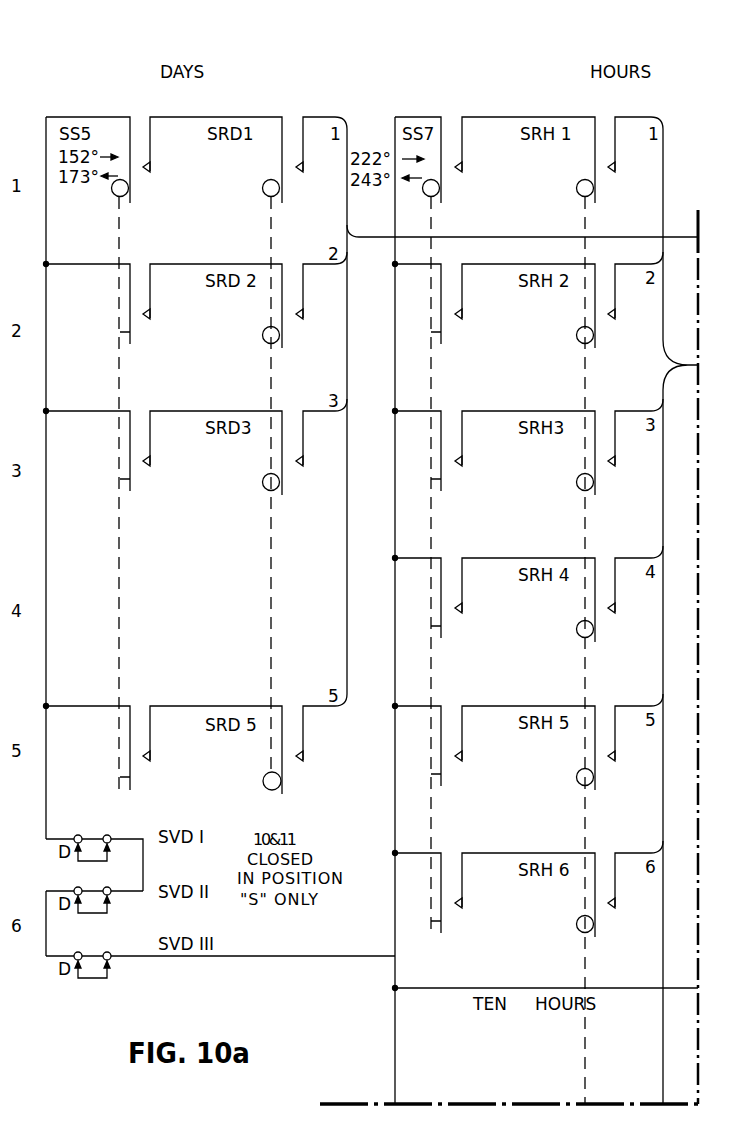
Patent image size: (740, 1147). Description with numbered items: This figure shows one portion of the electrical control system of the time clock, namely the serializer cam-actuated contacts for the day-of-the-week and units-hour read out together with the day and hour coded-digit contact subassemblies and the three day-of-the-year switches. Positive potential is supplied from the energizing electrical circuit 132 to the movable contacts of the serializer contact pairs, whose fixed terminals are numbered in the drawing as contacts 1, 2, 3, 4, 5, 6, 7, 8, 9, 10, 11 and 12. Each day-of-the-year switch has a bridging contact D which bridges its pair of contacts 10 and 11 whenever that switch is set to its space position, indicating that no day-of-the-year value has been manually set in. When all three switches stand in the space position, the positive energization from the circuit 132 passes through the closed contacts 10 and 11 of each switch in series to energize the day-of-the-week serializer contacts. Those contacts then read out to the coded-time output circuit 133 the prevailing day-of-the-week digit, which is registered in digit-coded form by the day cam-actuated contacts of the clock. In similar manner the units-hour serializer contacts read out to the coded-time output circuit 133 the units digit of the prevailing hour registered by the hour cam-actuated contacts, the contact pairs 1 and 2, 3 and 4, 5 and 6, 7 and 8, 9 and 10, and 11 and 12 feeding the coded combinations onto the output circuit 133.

The contact 1 is at (250, 160).
The contact 2 is at (369, 160).
The contact 3 is at (249, 304).
The contact 4 is at (369, 306).
The contact 5 is at (249, 451).
The contact 6 is at (369, 453).
The contact 7 is at (249, 674).
The contact 8 is at (369, 676).
The contact 9 is at (424, 746).
The contact 10 is at (334, 833).
The contact 11 is at (281, 887).
The contact 12 is at (525, 895).
The electrical circuit 132 is at (637, 988).
The coded-time output circuit 133 is at (627, 236).